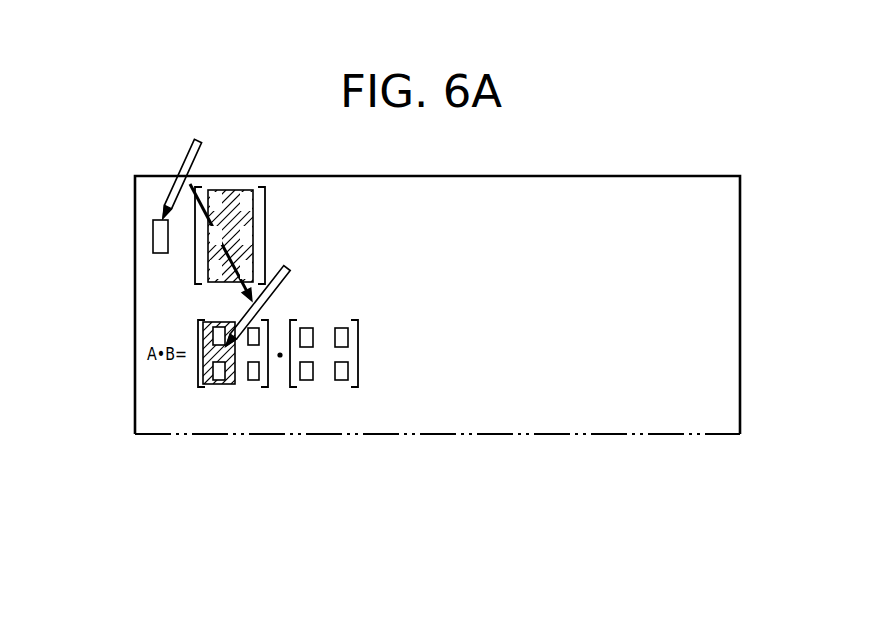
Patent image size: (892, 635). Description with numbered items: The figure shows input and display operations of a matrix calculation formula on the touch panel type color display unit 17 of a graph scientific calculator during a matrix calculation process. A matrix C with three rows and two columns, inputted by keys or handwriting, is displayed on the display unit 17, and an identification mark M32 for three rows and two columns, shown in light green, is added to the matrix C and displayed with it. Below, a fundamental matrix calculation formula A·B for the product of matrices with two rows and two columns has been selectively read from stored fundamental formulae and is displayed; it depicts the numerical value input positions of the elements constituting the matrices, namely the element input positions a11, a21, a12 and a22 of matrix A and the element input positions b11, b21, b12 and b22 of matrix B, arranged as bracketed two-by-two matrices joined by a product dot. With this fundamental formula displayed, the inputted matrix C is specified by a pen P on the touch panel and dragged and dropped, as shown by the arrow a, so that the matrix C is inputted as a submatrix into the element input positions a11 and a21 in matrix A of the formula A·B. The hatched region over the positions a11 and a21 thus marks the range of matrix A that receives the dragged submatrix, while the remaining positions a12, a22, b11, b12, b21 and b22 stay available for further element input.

The touch panel type color display unit 17 is at (740, 287).
The identification mark M32 is at (201, 285).
The arrow a is at (208, 253).
The pen P is at (292, 268).
The element input position a11 is at (208, 337).
The element input position a12 is at (259, 336).
The element input position a21 is at (208, 373).
The element input position a22 is at (254, 381).
The element input position b11 is at (313, 337).
The element input position b12 is at (348, 337).
The element input position b21 is at (306, 381).
The element input position b22 is at (341, 381).